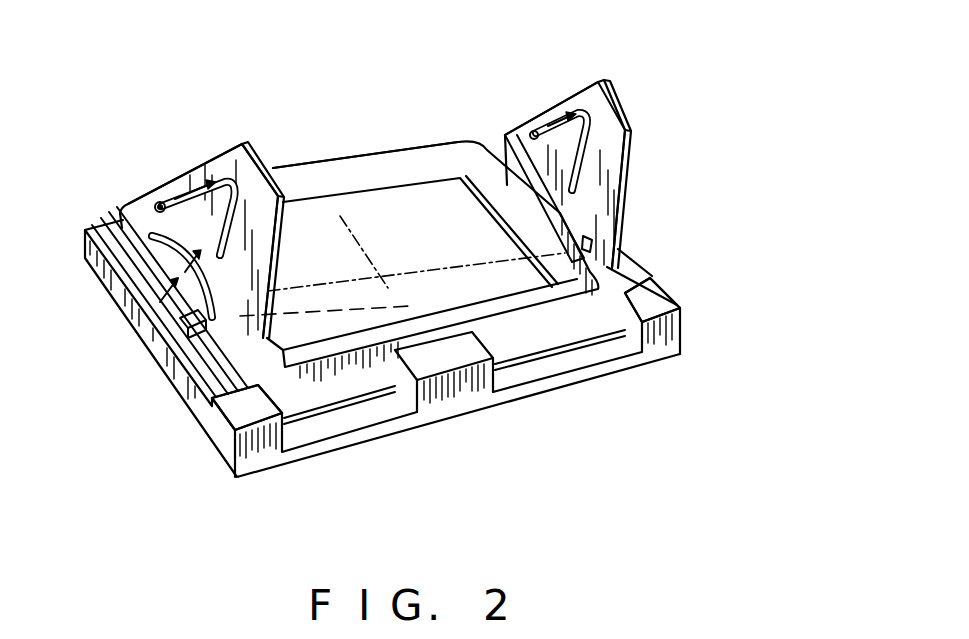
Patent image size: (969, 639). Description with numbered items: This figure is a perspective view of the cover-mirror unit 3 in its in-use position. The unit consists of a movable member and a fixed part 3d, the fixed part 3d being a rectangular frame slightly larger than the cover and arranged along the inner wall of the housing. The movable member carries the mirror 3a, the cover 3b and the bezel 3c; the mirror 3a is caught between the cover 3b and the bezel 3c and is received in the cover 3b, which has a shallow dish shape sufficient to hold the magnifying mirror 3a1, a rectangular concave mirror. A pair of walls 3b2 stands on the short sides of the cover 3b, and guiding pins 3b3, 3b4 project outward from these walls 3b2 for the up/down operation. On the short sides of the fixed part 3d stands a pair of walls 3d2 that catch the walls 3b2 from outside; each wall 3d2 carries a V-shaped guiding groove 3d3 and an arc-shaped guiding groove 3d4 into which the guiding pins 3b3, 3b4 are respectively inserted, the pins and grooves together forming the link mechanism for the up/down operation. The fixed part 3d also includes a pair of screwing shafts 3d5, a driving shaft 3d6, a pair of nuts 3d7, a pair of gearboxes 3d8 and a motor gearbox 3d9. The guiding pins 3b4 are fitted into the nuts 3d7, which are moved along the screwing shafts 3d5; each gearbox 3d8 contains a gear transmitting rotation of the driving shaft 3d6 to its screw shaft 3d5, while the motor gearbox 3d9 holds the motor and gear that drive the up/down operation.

The cover-mirror unit 3 is at (414, 298).
The mirror 3a is at (425, 195).
The magnifying mirror 3a1 is at (453, 210).
The cover 3b is at (308, 385).
The walls 3b2 is at (527, 177).
The guiding pin 3b3 is at (160, 205).
The guiding pin 3b4 is at (402, 289).
The bezel 3c is at (385, 165).
The fixed part 3d is at (232, 445).
The walls 3d2 is at (143, 217).
The guiding groove 3d3 is at (268, 170).
The guiding groove 3d4 is at (165, 265).
The screwing shaft 3d5 is at (203, 383).
The driving shaft 3d6 is at (393, 405).
The nut 3d7 is at (195, 322).
The gearbox 3d8 is at (266, 448).
The motor gearbox 3d9 is at (455, 380).